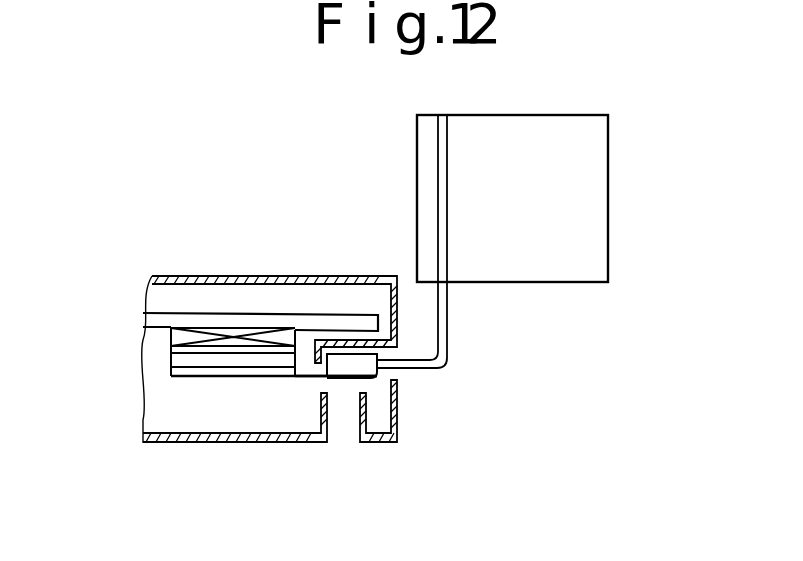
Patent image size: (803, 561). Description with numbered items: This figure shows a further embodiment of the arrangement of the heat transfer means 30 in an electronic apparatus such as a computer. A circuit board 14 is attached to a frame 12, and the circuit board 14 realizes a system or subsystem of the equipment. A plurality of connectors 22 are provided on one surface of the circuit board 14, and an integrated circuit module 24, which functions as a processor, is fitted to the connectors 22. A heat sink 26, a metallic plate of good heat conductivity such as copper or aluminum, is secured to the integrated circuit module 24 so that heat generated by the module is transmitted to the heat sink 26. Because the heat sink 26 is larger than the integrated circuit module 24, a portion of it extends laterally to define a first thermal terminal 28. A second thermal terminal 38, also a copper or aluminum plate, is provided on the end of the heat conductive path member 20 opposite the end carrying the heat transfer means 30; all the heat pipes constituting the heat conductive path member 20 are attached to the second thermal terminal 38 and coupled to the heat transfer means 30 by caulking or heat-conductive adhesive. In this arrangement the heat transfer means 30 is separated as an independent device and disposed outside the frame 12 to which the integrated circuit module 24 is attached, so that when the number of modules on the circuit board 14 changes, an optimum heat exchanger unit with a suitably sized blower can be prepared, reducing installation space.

The frame 12 is at (232, 277).
The circuit board 14 is at (170, 317).
The heat conductive path member 20 is at (430, 365).
The connectors 22 is at (175, 335).
The integrated circuit module 24 is at (210, 358).
The heat sink 26 is at (267, 377).
The first thermal terminal 28 is at (340, 378).
The heat transfer means 30 is at (596, 212).
The second thermal terminal 38 is at (365, 383).